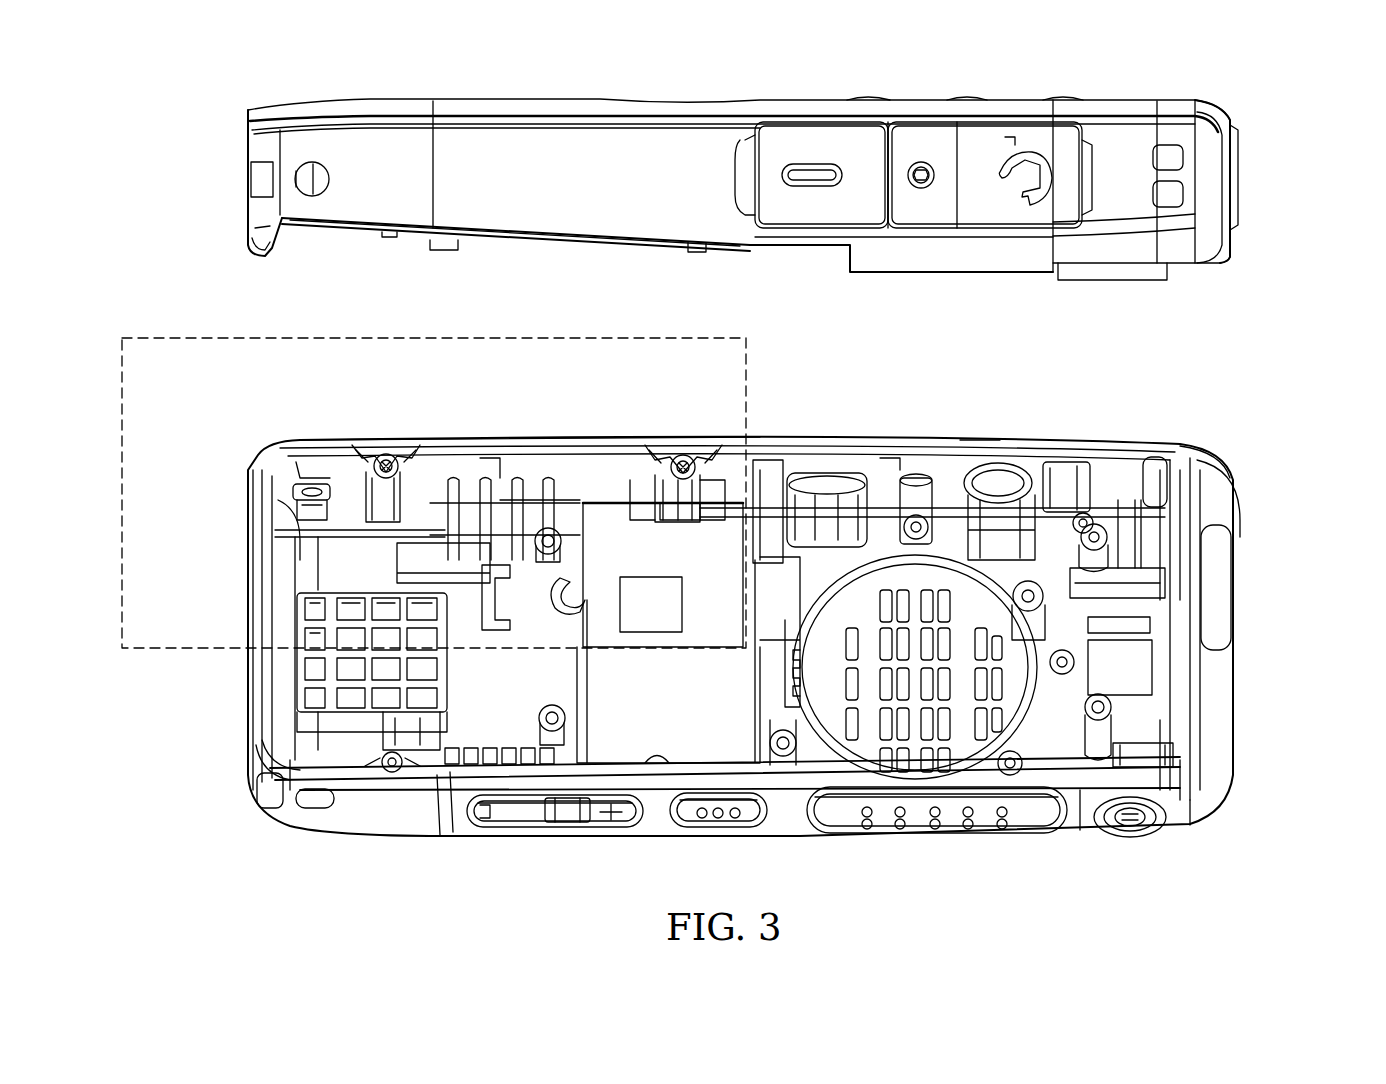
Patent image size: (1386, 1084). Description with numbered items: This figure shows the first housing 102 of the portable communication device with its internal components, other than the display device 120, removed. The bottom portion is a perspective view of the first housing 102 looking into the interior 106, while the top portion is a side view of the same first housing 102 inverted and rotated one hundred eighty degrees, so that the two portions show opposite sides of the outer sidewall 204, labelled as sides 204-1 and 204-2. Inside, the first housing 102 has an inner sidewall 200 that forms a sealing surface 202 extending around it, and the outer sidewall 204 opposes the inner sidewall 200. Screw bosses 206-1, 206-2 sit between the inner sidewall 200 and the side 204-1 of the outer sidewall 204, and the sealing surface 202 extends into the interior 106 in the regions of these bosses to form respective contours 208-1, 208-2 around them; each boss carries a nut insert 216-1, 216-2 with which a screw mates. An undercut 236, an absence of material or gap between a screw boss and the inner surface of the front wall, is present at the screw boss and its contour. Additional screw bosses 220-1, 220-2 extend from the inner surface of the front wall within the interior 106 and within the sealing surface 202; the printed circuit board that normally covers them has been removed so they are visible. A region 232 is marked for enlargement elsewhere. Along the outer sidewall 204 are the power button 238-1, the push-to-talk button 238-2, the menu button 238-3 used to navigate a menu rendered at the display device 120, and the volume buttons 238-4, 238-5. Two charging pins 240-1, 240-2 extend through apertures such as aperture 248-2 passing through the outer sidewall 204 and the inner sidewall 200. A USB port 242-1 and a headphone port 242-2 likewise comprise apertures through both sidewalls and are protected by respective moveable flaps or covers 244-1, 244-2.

The first housing 102 is at (1228, 108).
The interior 106 is at (707, 262).
The display device 120 is at (667, 551).
The inner sidewall 200 is at (928, 443).
The sealing surface 202 is at (262, 462).
The outer sidewall 204 is at (985, 437).
The side of the outer sidewall 204-1 is at (552, 205).
The side of the outer sidewall 204-2 is at (440, 835).
The screw boss 206-1 is at (373, 452).
The screw boss 206-2 is at (667, 462).
The contour 208-1 is at (383, 490).
The contour 208-2 is at (655, 478).
The nut insert 216-1 is at (390, 453).
The nut insert 216-2 is at (690, 462).
The additional screw boss 220-1 is at (1093, 533).
The additional screw boss 220-2 is at (1085, 705).
The region 232 is at (263, 336).
The undercut 236 is at (680, 508).
The power button 238-1 is at (1128, 826).
The push-to-talk button 238-2 is at (919, 820).
The menu button 238-3 is at (712, 822).
The volume button 238-4 is at (593, 818).
The volume button 238-5 is at (516, 818).
The charging pin 240-1 is at (313, 797).
The charging pin 240-2 is at (315, 185).
The USB port 242-1 is at (833, 497).
The headphone port 242-2 is at (1020, 470).
The cover 244-1 is at (802, 140).
The cover 244-2 is at (1005, 140).
The aperture 248-2 is at (292, 490).